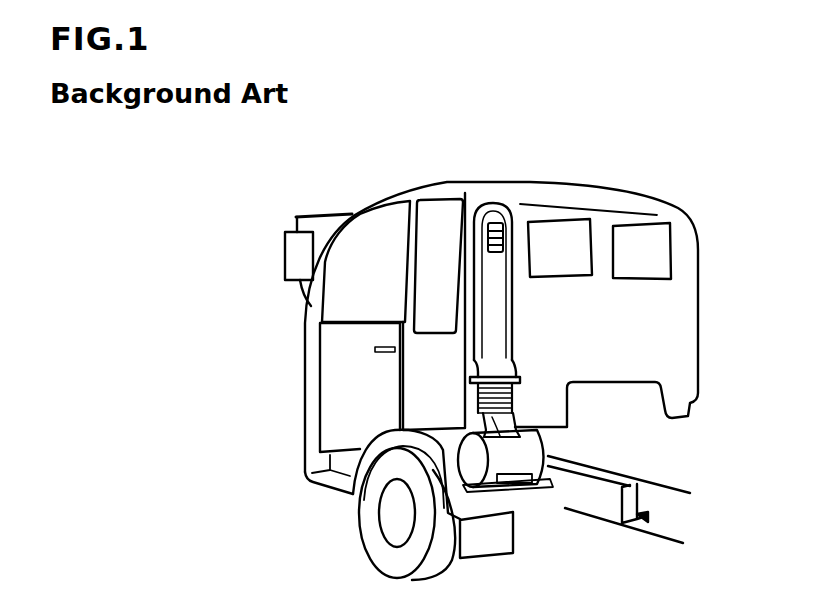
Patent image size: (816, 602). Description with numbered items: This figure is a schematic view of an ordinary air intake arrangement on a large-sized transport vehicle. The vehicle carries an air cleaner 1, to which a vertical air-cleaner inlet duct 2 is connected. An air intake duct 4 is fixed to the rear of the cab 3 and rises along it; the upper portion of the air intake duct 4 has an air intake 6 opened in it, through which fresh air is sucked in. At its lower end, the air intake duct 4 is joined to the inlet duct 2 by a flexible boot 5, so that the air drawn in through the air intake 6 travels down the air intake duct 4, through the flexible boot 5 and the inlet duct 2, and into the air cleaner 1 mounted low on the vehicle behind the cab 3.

The air cleaner 1 is at (527, 455).
The air-cleaner inlet duct 2 is at (511, 427).
The cab 3 is at (609, 184).
The air intake duct 4 is at (503, 323).
The flexible boot 5 is at (518, 402).
The air intake 6 is at (499, 227).